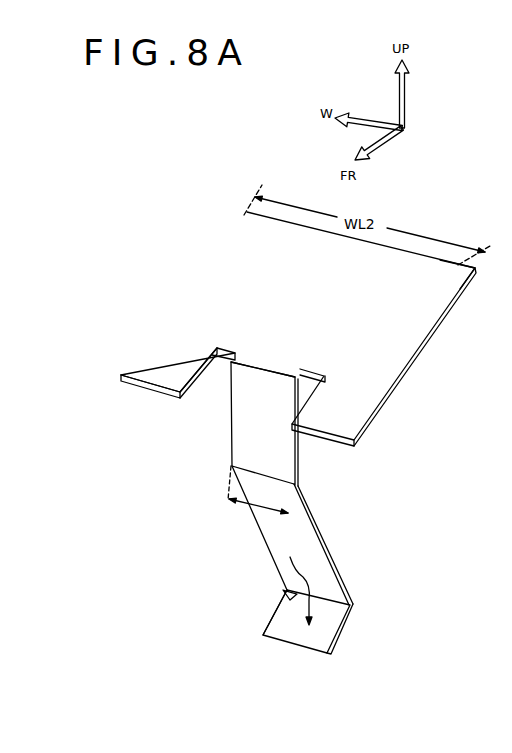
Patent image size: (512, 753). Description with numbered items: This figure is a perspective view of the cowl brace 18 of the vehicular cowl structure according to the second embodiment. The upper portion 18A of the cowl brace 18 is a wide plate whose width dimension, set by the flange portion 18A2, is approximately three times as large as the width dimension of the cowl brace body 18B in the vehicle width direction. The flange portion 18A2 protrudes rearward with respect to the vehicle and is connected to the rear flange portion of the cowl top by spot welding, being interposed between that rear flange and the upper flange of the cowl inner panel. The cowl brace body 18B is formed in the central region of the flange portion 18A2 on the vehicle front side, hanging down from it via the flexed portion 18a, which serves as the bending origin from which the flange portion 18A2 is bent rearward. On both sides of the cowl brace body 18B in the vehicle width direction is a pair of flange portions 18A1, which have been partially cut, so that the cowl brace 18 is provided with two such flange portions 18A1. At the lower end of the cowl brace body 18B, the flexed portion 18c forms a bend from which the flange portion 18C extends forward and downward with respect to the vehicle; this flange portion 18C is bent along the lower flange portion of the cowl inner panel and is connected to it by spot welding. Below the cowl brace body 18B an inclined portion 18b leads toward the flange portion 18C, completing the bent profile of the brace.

The cowl brace 18 is at (196, 275).
The upper portion 18A is at (397, 347).
The flange portion 18A1 is at (318, 420).
The flange portion 18A2 is at (466, 259).
The flexed portion 18a is at (263, 369).
The cowl brace body 18B is at (230, 463).
The inclined portion 18b is at (300, 496).
The flange portion 18C is at (328, 630).
The flexed portion 18c is at (280, 612).